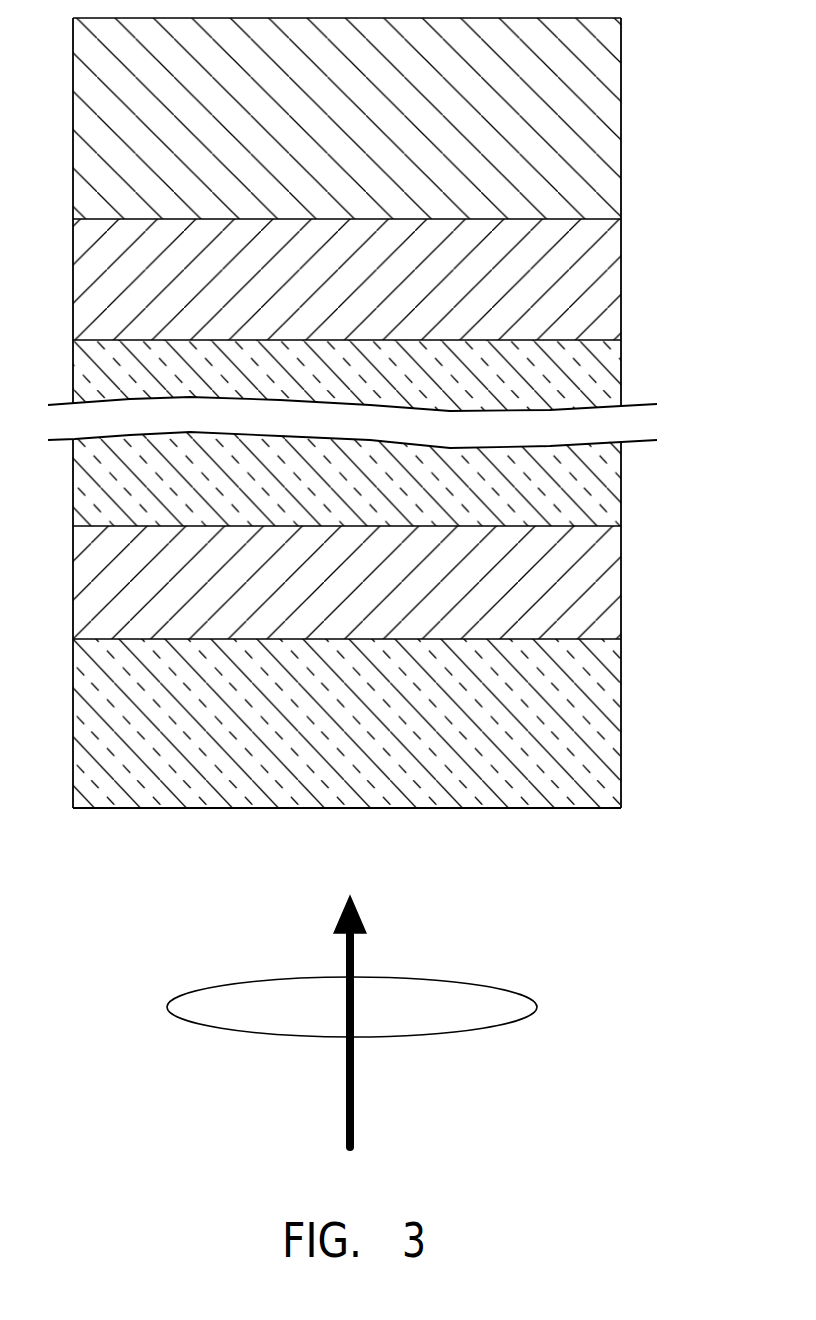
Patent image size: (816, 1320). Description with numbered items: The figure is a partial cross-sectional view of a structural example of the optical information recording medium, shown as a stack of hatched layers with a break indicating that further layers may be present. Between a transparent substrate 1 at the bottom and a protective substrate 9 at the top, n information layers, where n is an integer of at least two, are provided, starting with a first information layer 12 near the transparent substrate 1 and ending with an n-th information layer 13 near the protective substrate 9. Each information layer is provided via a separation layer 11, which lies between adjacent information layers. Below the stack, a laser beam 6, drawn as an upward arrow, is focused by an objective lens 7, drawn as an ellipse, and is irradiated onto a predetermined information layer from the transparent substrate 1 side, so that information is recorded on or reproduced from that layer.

The transparent substrate 1 is at (612, 733).
The first information layer 12 is at (611, 590).
The separation layer 11 is at (613, 370).
The n-th information layer 13 is at (613, 277).
The protective substrate 9 is at (612, 122).
The objective lens 7 is at (535, 1008).
The laser beam 6 is at (355, 1111).